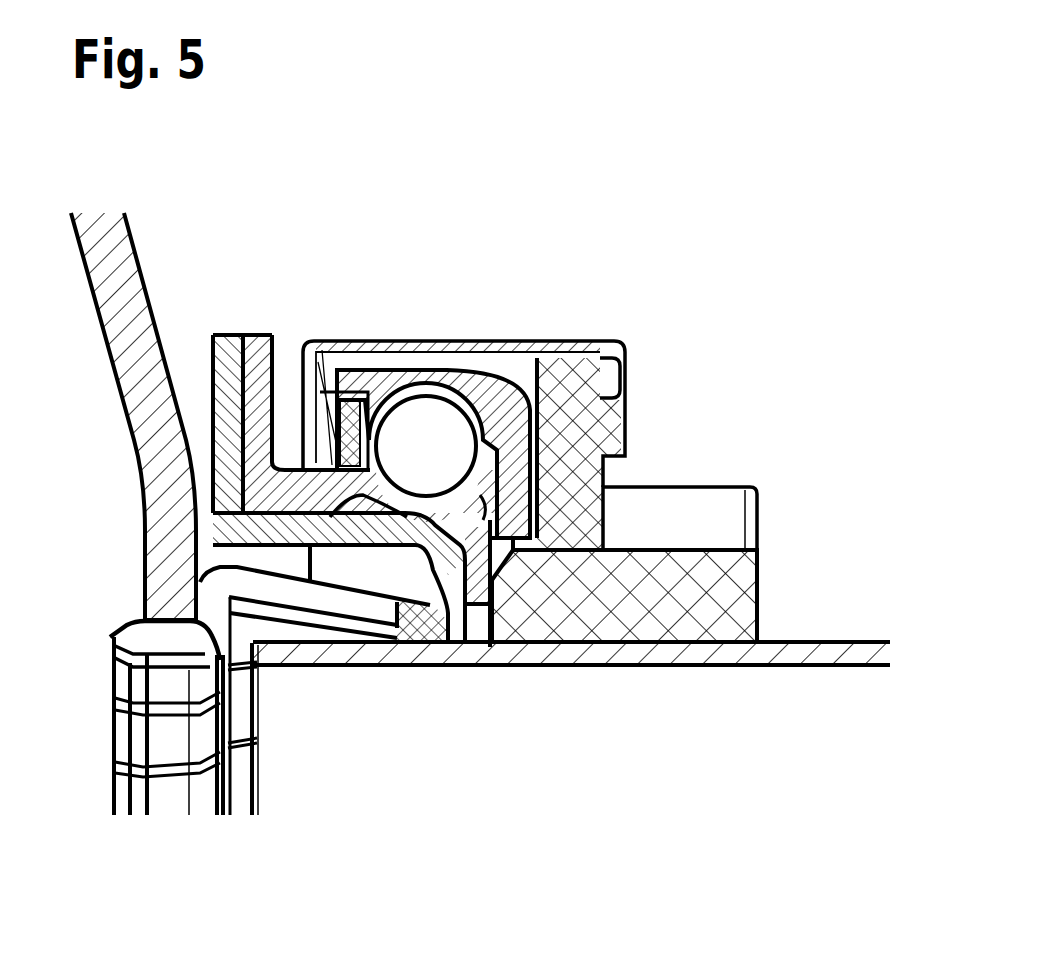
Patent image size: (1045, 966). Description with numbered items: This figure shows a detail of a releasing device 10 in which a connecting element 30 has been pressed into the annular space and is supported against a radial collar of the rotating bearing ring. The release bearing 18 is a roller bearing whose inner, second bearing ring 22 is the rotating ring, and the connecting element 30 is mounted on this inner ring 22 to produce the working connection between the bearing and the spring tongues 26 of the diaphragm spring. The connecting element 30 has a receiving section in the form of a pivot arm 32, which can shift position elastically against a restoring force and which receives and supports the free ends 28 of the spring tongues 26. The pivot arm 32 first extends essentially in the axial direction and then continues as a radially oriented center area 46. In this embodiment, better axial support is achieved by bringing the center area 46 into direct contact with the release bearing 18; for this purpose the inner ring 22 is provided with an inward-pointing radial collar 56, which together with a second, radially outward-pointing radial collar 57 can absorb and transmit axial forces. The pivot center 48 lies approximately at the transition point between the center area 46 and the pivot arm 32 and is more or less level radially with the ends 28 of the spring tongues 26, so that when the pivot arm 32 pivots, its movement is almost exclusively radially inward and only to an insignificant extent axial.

The releasing device 10 is at (80, 757).
The release bearing 18 is at (513, 332).
The inner, second bearing ring 22 is at (403, 510).
The spring tongues 26 is at (127, 333).
The free ends 28 is at (155, 613).
The connecting element 30 is at (215, 835).
The pivot arm 32 is at (277, 596).
The center area 46 is at (442, 580).
The pivot center 48 is at (422, 556).
The radial collar 56 is at (503, 593).
The second radial collar 57 is at (257, 367).